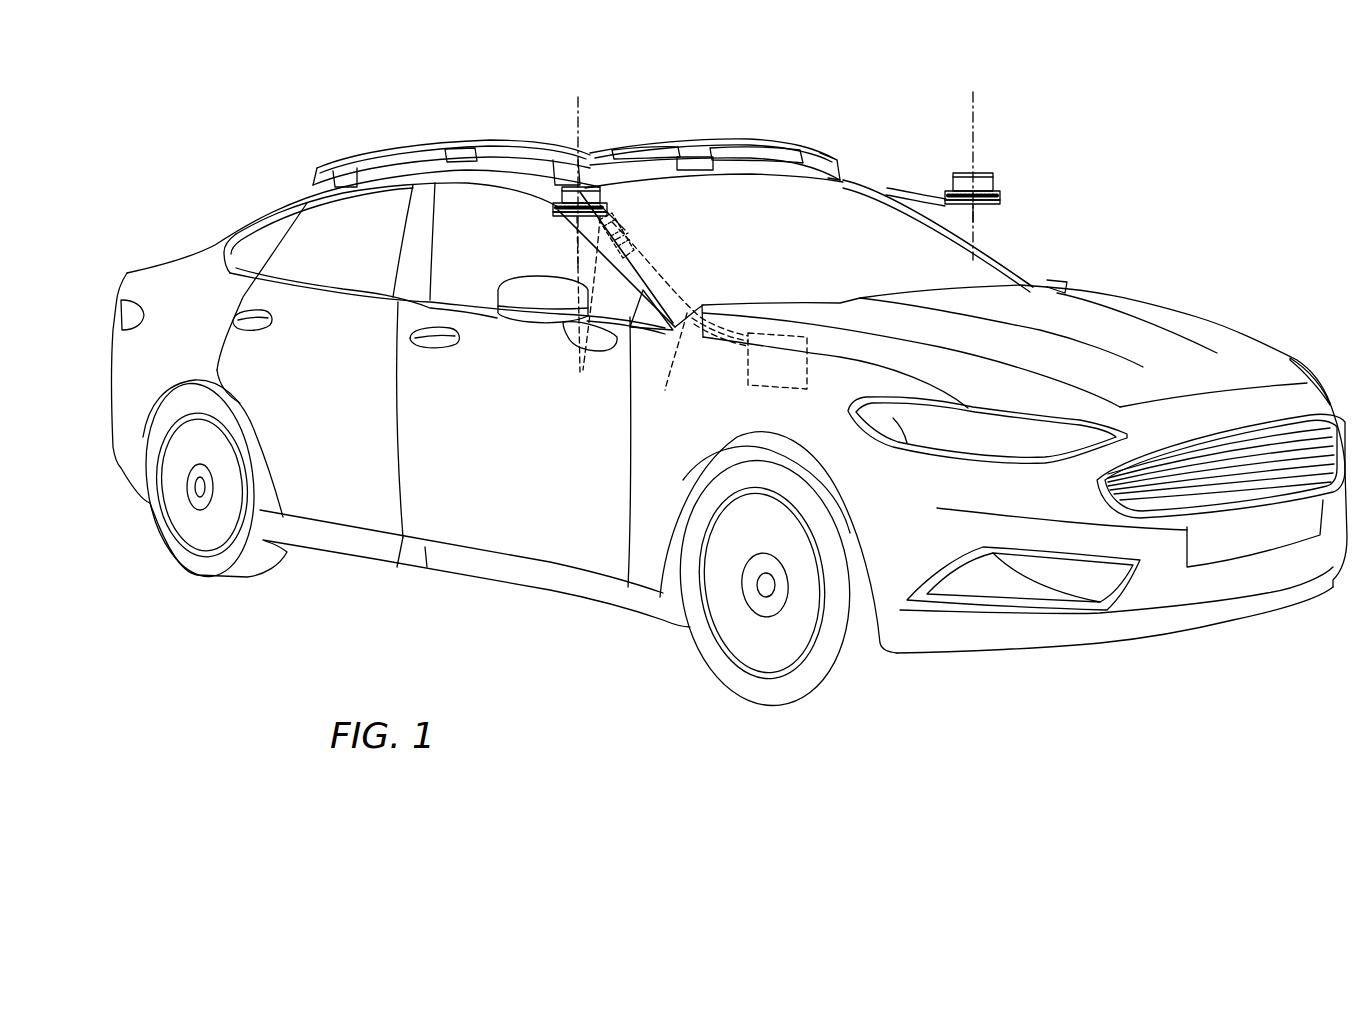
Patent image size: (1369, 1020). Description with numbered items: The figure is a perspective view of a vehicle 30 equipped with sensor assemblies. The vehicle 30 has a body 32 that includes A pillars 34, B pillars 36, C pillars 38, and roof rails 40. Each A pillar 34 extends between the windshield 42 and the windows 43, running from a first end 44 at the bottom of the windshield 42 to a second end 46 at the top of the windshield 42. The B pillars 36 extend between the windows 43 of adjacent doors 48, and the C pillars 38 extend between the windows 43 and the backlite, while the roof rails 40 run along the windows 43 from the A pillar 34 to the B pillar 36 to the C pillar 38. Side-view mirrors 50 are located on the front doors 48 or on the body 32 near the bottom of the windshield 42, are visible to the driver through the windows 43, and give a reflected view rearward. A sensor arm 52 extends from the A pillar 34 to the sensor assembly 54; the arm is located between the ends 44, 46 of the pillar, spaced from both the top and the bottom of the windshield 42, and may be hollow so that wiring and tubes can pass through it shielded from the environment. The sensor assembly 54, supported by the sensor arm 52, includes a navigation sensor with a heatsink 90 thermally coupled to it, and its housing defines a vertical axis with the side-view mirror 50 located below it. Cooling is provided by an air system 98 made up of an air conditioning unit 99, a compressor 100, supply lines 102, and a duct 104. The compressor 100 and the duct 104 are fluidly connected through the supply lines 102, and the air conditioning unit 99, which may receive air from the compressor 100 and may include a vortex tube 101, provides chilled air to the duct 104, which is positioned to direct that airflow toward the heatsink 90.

The vehicle 30 is at (1040, 109).
The body 32 is at (367, 560).
The A pillar 34 is at (661, 273).
The B pillar 36 is at (437, 242).
The C pillar 38 is at (281, 223).
The roof rail 40 is at (395, 190).
The windshield 42 is at (737, 177).
The window 43 is at (378, 312).
The first end 44 is at (688, 306).
The second end 46 is at (840, 180).
The door 48 is at (388, 540).
The side-view mirror 50 is at (531, 328).
The sensor arm 52 is at (610, 212).
The sensor assembly 54 is at (593, 187).
The heatsink 90 is at (556, 202).
The air system 98 is at (713, 352).
The air conditioning unit 99 is at (620, 227).
The compressor 100 is at (783, 388).
The vortex tube 101 is at (640, 233).
The supply line 102 is at (651, 315).
The duct 104 is at (562, 213).